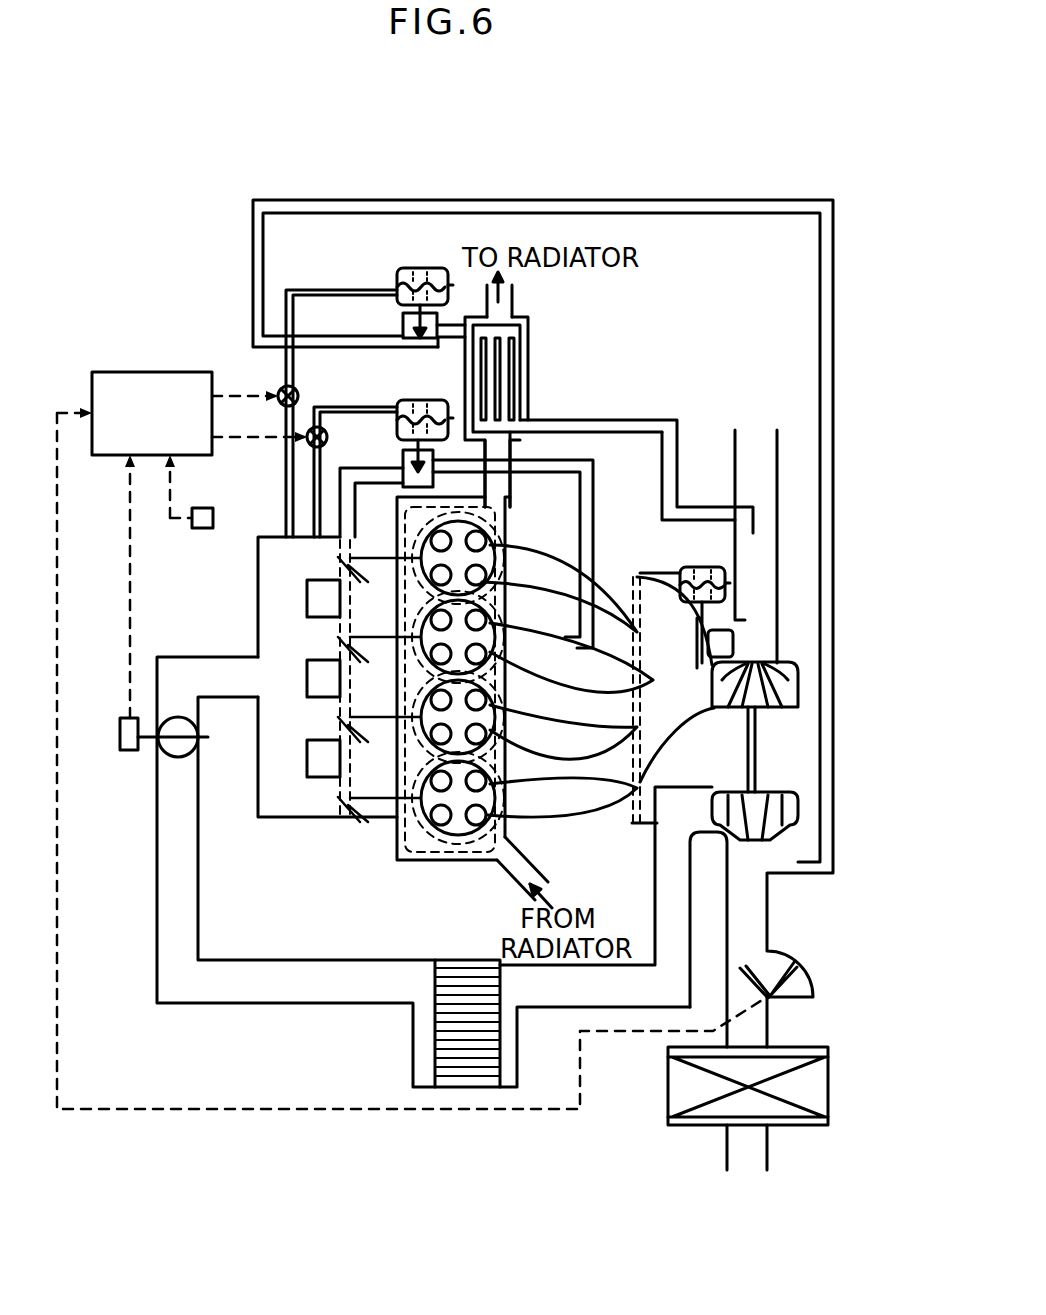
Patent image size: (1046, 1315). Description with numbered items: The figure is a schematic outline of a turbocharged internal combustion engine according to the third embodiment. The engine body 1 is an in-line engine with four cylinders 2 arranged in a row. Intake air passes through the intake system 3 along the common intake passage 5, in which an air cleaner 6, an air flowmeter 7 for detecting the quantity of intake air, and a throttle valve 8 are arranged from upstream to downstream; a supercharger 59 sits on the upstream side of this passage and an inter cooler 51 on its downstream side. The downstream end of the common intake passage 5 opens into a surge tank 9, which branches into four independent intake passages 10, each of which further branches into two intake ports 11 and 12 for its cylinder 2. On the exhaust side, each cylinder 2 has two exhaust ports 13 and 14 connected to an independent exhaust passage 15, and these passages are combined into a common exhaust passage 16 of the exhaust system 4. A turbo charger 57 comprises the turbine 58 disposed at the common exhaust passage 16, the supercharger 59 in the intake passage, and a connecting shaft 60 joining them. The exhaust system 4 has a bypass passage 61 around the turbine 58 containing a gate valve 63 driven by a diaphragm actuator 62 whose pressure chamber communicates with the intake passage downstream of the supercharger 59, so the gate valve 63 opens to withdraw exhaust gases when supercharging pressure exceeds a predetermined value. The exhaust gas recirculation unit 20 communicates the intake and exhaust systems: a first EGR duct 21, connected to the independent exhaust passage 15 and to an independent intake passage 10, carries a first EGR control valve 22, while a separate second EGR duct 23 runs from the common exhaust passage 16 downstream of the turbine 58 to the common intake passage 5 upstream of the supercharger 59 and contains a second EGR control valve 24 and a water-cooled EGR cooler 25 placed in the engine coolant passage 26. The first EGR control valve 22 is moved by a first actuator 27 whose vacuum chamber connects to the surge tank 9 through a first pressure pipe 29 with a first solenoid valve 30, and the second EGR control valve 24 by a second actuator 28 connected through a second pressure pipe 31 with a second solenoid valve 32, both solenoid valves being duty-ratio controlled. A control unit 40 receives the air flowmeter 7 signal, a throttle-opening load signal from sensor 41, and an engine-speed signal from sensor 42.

The engine body 1 is at (410, 860).
The cylinder 2 is at (496, 526).
The intake system 3 is at (274, 944).
The exhaust system 4 is at (686, 758).
The common intake passage 5 is at (579, 1000).
The air cleaner 6 is at (668, 1100).
The air flowmeter 7 is at (814, 975).
The throttle valve 8 is at (164, 748).
The surge tank 9 is at (292, 700).
The independent intake passage 10 is at (314, 572).
The intake port 11 is at (398, 534).
The intake port 12 is at (412, 560).
The exhaust port 13 is at (486, 541).
The exhaust port 14 is at (486, 575).
The independent exhaust passage 15 is at (603, 592).
The common exhaust passage 16 is at (765, 466).
The exhaust gas recirculation unit 20 is at (624, 349).
The first EGR duct 21 is at (489, 554).
The first EGR control valve 22 is at (406, 470).
The second EGR duct 23 is at (622, 422).
The second EGR control valve 24 is at (404, 334).
The EGR cooler 25 is at (534, 356).
The coolant passage 26 is at (524, 298).
The first actuator 27 is at (432, 400).
The second actuator 28 is at (406, 268).
The first pressure pipe 29 is at (342, 404).
The first solenoid valve 30 is at (327, 434).
The second pressure pipe 31 is at (311, 288).
The second solenoid valve 32 is at (278, 393).
The control unit 40 is at (152, 370).
The sensor 41 is at (120, 744).
The sensor 42 is at (210, 508).
The inter cooler 51 is at (448, 959).
The turbo charger 57 is at (768, 778).
The turbine 58 is at (776, 666).
The supercharger 59 is at (772, 855).
The connecting shaft 60 is at (747, 738).
The bypass passage 61 is at (696, 646).
The actuator 62 is at (698, 566).
The gate valve 63 is at (702, 669).